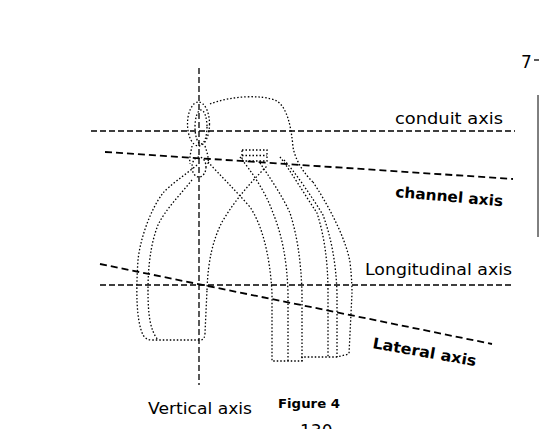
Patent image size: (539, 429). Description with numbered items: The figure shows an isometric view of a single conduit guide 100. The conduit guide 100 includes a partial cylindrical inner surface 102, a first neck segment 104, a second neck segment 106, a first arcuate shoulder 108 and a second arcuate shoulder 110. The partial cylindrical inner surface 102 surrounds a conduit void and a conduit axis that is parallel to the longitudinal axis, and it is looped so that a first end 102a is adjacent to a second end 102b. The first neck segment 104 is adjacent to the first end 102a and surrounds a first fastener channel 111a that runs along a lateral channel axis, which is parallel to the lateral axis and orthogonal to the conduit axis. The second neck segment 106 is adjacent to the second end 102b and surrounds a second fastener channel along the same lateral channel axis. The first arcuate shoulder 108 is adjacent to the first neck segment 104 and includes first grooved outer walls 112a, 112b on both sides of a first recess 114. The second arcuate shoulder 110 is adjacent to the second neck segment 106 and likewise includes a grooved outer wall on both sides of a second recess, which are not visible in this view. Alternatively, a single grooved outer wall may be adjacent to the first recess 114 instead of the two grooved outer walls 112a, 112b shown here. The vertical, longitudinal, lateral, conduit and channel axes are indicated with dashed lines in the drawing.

The conduit guide 100 is at (189, 160).
The partial cylindrical inner surface 102 is at (208, 114).
The first end 102a is at (214, 140).
The second end 102b is at (185, 135).
The first neck segment 104 is at (218, 163).
The second neck segment 106 is at (185, 160).
The first arcuate shoulder 108 is at (267, 237).
The second arcuate shoulder 110 is at (152, 228).
The first fastener channel 111a is at (262, 160).
The first grooved outer wall 112a is at (293, 277).
The first grooved outer wall 112b is at (343, 266).
The first recess 114 is at (317, 254).